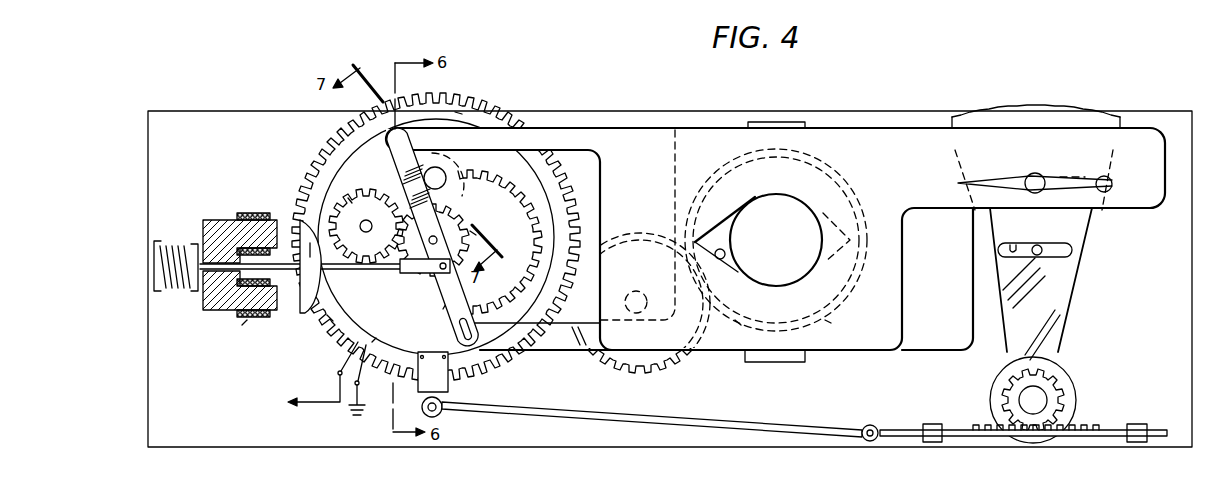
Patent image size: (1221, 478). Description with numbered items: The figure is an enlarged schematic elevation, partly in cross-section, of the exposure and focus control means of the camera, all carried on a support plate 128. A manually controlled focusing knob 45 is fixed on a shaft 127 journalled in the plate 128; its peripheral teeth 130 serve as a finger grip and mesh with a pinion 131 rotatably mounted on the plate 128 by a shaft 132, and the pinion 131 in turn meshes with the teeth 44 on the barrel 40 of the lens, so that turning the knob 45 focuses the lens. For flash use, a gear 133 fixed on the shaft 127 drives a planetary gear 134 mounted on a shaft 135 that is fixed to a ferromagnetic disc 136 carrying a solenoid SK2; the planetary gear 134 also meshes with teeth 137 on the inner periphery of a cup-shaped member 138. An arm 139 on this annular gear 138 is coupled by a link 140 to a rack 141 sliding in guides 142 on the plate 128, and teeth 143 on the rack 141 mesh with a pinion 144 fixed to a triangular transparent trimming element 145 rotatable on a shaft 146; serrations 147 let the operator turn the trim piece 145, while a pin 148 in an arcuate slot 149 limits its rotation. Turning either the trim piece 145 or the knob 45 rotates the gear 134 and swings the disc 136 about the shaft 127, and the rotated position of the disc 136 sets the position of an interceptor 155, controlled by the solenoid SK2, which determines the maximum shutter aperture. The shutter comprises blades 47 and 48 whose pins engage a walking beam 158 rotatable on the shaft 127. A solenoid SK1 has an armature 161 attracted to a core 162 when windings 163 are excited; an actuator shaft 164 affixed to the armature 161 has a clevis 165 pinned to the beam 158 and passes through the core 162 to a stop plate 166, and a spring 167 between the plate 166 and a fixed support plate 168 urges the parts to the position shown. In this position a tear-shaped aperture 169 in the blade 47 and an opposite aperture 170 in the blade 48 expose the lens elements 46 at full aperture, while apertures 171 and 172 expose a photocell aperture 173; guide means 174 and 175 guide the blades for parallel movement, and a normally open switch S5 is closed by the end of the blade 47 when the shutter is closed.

The barrel 40 is at (738, 323).
The teeth 44 is at (828, 322).
The focusing knob 45 is at (460, 112).
The lens elements 46 is at (790, 215).
The shutter blade 47 is at (910, 345).
The shutter blade 48 is at (653, 143).
The shaft 127 is at (473, 233).
The support plate 128 is at (285, 437).
The teeth 130 is at (497, 113).
The pinion 131 is at (640, 374).
The shaft 132 is at (637, 291).
The gear 133 is at (452, 207).
The planetary gear 134 is at (350, 200).
The shaft 135 is at (378, 210).
The disc 136 is at (400, 272).
The teeth 137 is at (372, 342).
The cup-shaped member 138 is at (327, 315).
The arm 139 is at (445, 396).
The link 140 is at (523, 404).
The rack 141 is at (890, 430).
The guides 142 is at (932, 423).
The teeth 143 is at (1067, 424).
The pinion 144 is at (1055, 386).
The trimming element 145 is at (1065, 290).
The shaft 146 is at (1025, 397).
The serrations 147 is at (1043, 100).
The pin 148 is at (1050, 243).
The arcuate slot 149 is at (1012, 243).
The interceptor 155 is at (447, 178).
The walking beam 158 is at (463, 311).
The armature 161 is at (303, 303).
The core 162 is at (212, 310).
The windings 163 is at (258, 213).
The actuator shaft 164 is at (380, 270).
The clevis 165 is at (430, 290).
The stop plate 166 is at (193, 242).
The spring 167 is at (182, 240).
The fixed support plate 168 is at (158, 242).
The tear-shaped aperture 169 is at (750, 208).
The tear-shaped aperture 170 is at (740, 256).
The tear-shaped aperture 171 is at (1108, 188).
The tear-shaped aperture 172 is at (1020, 176).
The aperture 173 is at (1048, 176).
The guide means 174 is at (778, 124).
The guide means 175 is at (765, 362).
The solenoid SK1 is at (242, 325).
The solenoid SK2 is at (463, 196).
The switch S5 is at (327, 388).